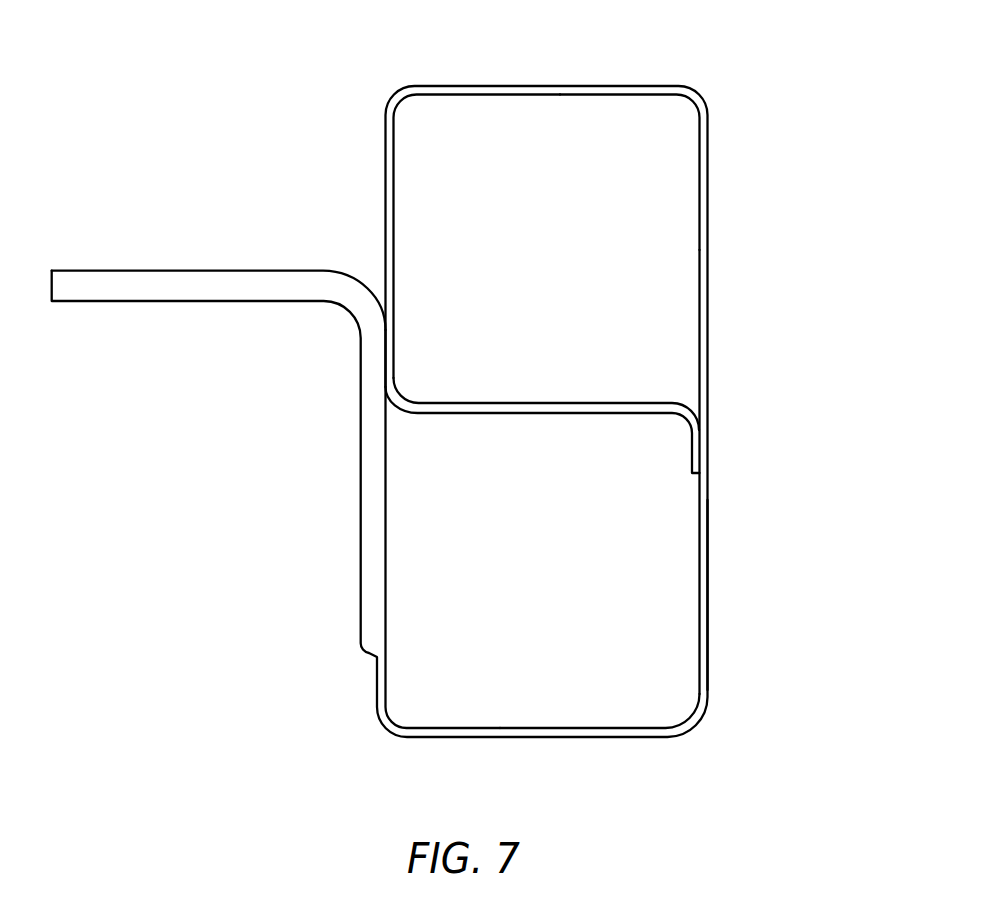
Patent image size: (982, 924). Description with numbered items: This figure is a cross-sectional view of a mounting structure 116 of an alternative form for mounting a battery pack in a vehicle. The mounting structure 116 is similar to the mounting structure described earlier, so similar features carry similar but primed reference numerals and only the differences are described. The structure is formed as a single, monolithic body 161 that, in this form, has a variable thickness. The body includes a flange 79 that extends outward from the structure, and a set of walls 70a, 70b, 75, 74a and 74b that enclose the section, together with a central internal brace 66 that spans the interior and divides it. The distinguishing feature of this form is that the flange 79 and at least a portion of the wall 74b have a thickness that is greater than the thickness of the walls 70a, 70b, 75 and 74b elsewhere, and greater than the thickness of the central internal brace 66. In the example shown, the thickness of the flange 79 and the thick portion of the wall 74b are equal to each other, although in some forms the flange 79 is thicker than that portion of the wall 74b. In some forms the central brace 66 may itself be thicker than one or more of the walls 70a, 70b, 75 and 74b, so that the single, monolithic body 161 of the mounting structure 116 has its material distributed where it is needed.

The mounting structure 116 is at (463, 67).
The wall 70a is at (386, 222).
The wall 70b is at (593, 96).
The wall 75 is at (708, 227).
The central internal brace 66 is at (542, 407).
The wall 74a is at (373, 561).
The wall 74b is at (608, 737).
The flange 79 is at (177, 267).
The single, monolithic body 161 is at (709, 598).